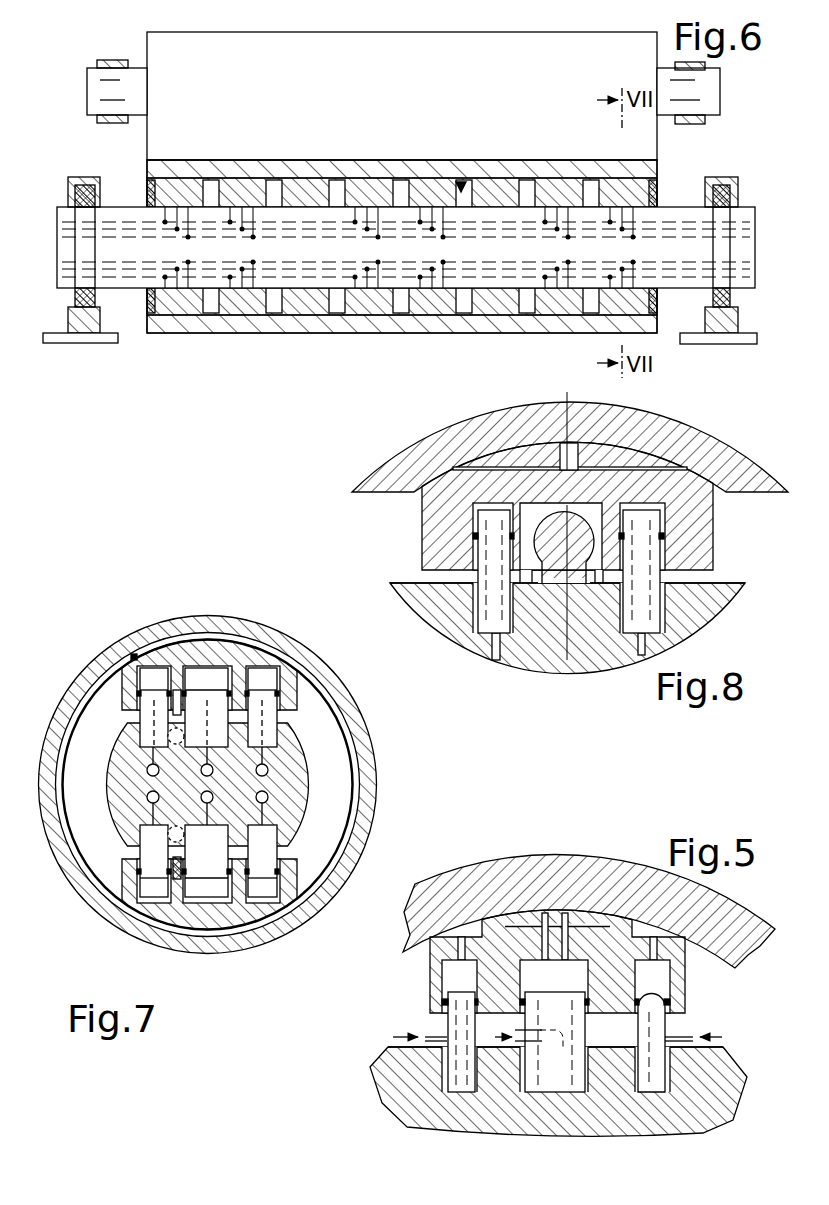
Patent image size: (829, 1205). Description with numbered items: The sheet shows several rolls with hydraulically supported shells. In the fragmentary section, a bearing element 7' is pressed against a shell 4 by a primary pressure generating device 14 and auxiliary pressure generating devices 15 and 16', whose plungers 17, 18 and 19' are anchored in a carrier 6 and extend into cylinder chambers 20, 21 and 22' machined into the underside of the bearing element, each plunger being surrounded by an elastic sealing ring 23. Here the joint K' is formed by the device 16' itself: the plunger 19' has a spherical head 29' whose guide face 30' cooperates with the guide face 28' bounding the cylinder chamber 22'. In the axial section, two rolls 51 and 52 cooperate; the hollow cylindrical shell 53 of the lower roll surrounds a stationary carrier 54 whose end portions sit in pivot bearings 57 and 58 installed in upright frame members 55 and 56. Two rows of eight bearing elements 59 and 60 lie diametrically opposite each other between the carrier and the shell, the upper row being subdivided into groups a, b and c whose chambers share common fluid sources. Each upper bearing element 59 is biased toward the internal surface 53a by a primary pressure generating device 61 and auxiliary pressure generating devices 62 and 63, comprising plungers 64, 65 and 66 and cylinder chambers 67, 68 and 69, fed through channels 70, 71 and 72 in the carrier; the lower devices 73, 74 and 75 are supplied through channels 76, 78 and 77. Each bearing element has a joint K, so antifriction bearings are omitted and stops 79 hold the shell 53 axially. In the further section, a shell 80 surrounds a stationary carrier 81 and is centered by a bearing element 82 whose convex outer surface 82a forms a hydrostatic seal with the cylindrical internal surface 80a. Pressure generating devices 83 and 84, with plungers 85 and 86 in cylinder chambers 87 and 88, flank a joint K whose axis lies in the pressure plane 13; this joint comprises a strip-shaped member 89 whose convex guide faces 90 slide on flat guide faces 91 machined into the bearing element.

In FIG. 6, the roll 51 is at (281, 338).
In FIG. 7, the roll 51 is at (60, 880).
In FIG. 6, the roll 52 is at (303, 94).
In FIG. 6, the hollow cylindrical shell 53 is at (340, 330).
In FIG. 7, the hollow cylindrical shell 53 is at (98, 670).
In FIG. 6, the internal surface 53a is at (463, 188).
In FIG. 6, the stationary carrier 54 is at (132, 296).
In FIG. 7, the stationary carrier 54 is at (124, 728).
In FIG. 6, the upright frame member 55 is at (80, 180).
In FIG. 6, the upright frame member 56 is at (722, 181).
In FIG. 6, the pivot bearing 57 is at (76, 190).
In FIG. 6, the pivot bearing 58 is at (740, 192).
In FIG. 6, the bearing element 59 is at (232, 190).
In FIG. 7, the bearing element 59 is at (137, 675).
In FIG. 6, the bearing element 60 is at (236, 312).
In FIG. 7, the bearing element 60 is at (135, 907).
In FIG. 7, the primary pressure generating device 61 is at (197, 667).
In FIG. 7, the auxiliary pressure generating device 62 is at (147, 667).
In FIG. 7, the auxiliary pressure generating device 63 is at (254, 667).
In FIG. 7, the plunger 64 is at (306, 752).
In FIG. 7, the plunger 65 is at (142, 716).
In FIG. 7, the plunger 66 is at (300, 733).
In FIG. 7, the cylinder chamber 67 is at (300, 696).
In FIG. 7, the cylinder chamber 68 is at (132, 657).
In FIG. 7, the cylinder chamber 69 is at (300, 672).
In FIG. 6, the channel 70 is at (125, 230).
In FIG. 7, the channel 70 is at (213, 798).
In FIG. 6, the channel 71 is at (103, 218).
In FIG. 7, the channel 71 is at (147, 773).
In FIG. 6, the channel 72 is at (133, 238).
In FIG. 7, the channel 72 is at (213, 772).
In FIG. 7, the primary pressure generating device 73 is at (219, 912).
In FIG. 7, the auxiliary pressure generating device 74 is at (168, 912).
In FIG. 7, the auxiliary pressure generating device 75 is at (270, 912).
In FIG. 6, the channel 76 is at (98, 318).
In FIG. 7, the channel 76 is at (267, 775).
In FIG. 6, the channel 77 is at (118, 278).
In FIG. 7, the channel 77 is at (267, 801).
In FIG. 6, the channel 78 is at (102, 256).
In FIG. 7, the channel 78 is at (147, 800).
In FIG. 6, the stop 79 is at (153, 306).
In FIG. 8, the shell 80 is at (724, 460).
In FIG. 8, the cylindrical internal surface 80a is at (490, 460).
In FIG. 8, the stationary carrier 81 is at (520, 653).
In FIG. 8, the bearing element 82 is at (708, 535).
In FIG. 8, the convex outer surface 82a is at (706, 468).
In FIG. 8, the pressure generating device 83 is at (476, 605).
In FIG. 8, the pressure generating device 84 is at (662, 613).
In FIG. 8, the plunger 85 is at (495, 550).
In FIG. 8, the plunger 86 is at (647, 559).
In FIG. 8, the cylinder chamber 87 is at (473, 507).
In FIG. 8, the cylinder chamber 88 is at (660, 503).
In FIG. 8, the strip-shaped member 89 is at (563, 542).
In FIG. 8, the convex guide face 90 is at (580, 548).
In FIG. 8, the flat guide face 91 is at (540, 506).
In FIG. 8, the pressure plane 13 is at (585, 410).
In FIG. 7, the joint K is at (129, 784).
In FIG. 8, the joint K is at (559, 482).
In FIG. 6, the group a is at (160, 151).
In FIG. 6, the group b is at (468, 151).
In FIG. 6, the group c is at (645, 151).
In FIG. 5, the shell 4 is at (717, 909).
In FIG. 5, the carrier 6 is at (483, 1133).
In FIG. 5, the bearing element 7' is at (736, 920).
In FIG. 5, the primary pressure generating device 14 is at (565, 1096).
In FIG. 5, the auxiliary pressure generating device 15 is at (458, 1098).
In FIG. 5, the auxiliary pressure generating device 16' is at (663, 1079).
In FIG. 5, the plunger 17 is at (538, 1092).
In FIG. 5, the plunger 18 is at (455, 1074).
In FIG. 5, the plunger 19' is at (685, 1090).
In FIG. 5, the cylinder chamber 20 is at (539, 986).
In FIG. 5, the cylinder chamber 21 is at (450, 973).
In FIG. 5, the cylinder chamber 22' is at (744, 929).
In FIG. 5, the elastic sealing ring 23 is at (445, 1002).
In FIG. 5, the guide face 28' is at (623, 914).
In FIG. 5, the spherical head 29' is at (703, 1016).
In FIG. 5, the guide face 30' is at (613, 1092).
In FIG. 5, the joint K' is at (701, 990).